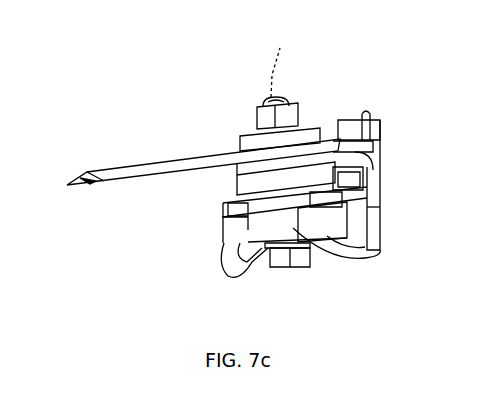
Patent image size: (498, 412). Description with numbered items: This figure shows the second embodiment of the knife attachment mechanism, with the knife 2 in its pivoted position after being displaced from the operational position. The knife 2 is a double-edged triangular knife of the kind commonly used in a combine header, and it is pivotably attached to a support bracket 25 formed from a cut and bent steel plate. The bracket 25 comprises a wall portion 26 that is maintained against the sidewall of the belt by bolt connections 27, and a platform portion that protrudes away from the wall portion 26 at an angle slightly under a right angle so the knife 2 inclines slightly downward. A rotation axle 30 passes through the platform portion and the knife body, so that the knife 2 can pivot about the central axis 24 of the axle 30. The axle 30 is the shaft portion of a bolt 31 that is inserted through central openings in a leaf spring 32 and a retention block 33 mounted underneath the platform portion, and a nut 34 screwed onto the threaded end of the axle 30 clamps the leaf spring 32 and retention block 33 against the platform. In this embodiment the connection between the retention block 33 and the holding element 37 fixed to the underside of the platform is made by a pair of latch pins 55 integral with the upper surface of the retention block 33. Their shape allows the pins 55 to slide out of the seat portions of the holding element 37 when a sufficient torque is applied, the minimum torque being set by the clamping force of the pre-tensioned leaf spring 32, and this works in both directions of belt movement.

The knife 2 is at (145, 158).
The central axis 24 is at (280, 48).
The support bracket 25 is at (380, 155).
The wall portion 26 is at (377, 232).
The bolt connections 27 is at (350, 127).
The rotation axle 30 is at (270, 99).
The bolt 31 is at (285, 262).
The leaf spring 32 is at (240, 266).
The retention block 33 is at (222, 228).
The nut 34 is at (285, 117).
The holding element 37 is at (233, 173).
The latch pins 55 is at (363, 186).